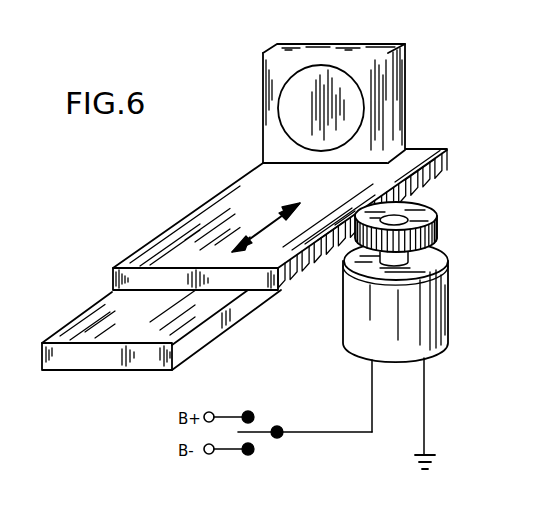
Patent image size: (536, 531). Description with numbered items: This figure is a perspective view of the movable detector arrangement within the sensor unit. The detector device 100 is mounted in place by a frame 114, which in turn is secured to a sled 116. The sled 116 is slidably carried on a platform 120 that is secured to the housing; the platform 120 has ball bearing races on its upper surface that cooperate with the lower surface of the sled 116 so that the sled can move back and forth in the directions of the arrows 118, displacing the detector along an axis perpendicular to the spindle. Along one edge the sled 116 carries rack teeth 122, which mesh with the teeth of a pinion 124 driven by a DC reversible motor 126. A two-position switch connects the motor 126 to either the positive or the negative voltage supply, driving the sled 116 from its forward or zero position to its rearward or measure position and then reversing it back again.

The detector device 100 is at (300, 92).
The frame 114 is at (270, 117).
The sled 116 is at (197, 222).
The arrows 118 is at (257, 228).
The platform 120 is at (100, 358).
The rack teeth 122 is at (313, 277).
The pinion 124 is at (437, 218).
The DC reversible motor 126 is at (435, 320).